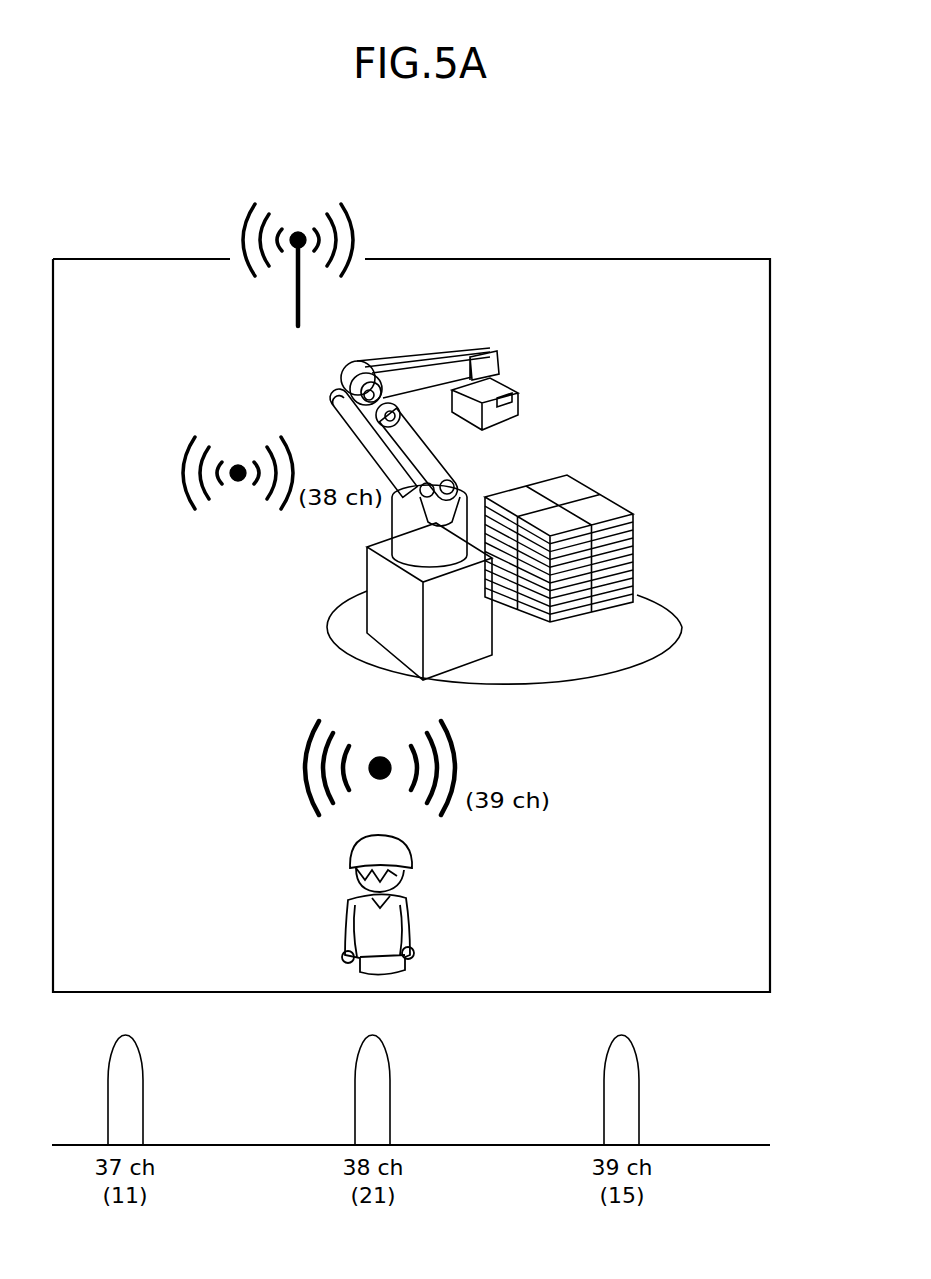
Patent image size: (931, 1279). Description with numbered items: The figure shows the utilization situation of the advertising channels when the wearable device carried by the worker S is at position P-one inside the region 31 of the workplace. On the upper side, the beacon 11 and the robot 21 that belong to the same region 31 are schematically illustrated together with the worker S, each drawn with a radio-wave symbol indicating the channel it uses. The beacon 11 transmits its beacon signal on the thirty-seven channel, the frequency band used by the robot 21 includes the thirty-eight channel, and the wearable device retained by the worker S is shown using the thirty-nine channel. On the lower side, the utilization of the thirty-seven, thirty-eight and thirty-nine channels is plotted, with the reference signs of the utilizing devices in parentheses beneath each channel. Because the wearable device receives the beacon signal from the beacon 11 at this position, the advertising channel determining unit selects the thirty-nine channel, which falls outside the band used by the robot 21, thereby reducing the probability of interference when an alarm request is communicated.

The beacon 11 is at (300, 306).
The robot 21 is at (493, 352).
The region 31 is at (757, 628).
The worker S is at (350, 922).